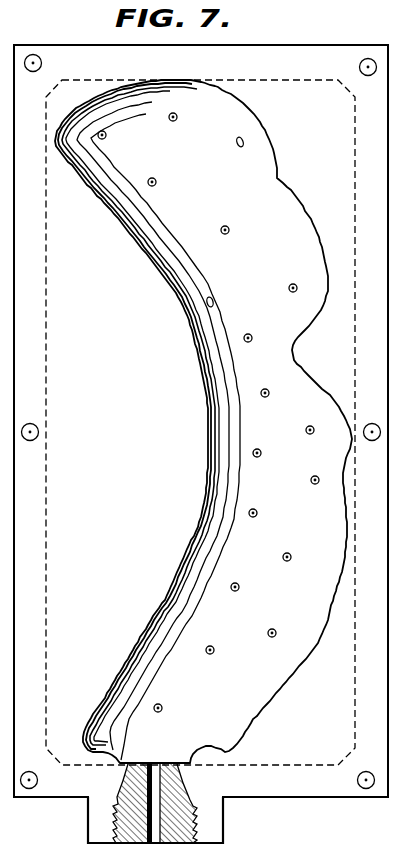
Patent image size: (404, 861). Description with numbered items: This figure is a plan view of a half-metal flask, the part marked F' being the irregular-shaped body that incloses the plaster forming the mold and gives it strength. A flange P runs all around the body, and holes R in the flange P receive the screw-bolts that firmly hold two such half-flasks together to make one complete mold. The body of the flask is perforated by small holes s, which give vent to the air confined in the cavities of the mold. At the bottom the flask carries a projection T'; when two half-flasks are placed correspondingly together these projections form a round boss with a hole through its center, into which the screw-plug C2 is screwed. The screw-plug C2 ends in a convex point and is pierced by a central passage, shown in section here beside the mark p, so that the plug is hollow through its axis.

The flange P is at (201, 444).
The holes R is at (201, 424).
The die / former F' is at (203, 421).
The small holes s is at (210, 412).
The screw-plug C2 is at (161, 804).
The slot p is at (153, 803).
The projection T' is at (167, 820).